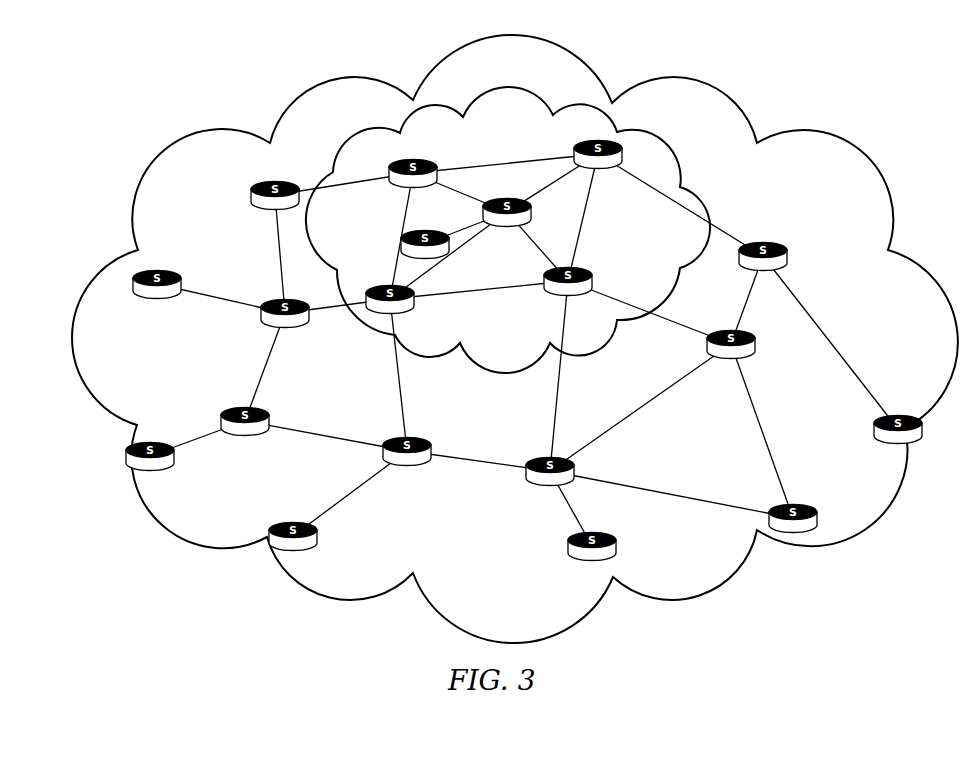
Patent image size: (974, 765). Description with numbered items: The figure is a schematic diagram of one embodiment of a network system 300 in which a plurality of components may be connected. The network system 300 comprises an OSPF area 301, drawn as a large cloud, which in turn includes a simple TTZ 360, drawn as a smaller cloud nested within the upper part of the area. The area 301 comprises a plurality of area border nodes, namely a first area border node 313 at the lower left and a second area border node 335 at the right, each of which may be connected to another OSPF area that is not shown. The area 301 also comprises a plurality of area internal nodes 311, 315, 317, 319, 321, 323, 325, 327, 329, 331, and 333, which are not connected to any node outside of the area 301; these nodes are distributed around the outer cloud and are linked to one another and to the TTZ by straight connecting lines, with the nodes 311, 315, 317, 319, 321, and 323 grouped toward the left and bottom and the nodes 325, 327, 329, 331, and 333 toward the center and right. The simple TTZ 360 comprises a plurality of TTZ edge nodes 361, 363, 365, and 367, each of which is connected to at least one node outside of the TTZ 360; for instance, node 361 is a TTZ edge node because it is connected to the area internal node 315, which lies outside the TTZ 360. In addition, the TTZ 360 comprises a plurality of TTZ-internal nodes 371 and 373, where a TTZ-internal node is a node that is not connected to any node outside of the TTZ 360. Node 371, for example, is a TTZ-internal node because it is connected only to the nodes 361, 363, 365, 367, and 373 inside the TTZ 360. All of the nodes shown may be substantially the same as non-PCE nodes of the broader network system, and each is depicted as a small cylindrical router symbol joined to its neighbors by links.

The network system 300 is at (90, 130).
The OSPF area 301 is at (837, 131).
The simple TTZ 360 is at (512, 83).
The area internal node 311 is at (157, 267).
The first area border node 313 is at (150, 470).
The area internal node 315 is at (275, 180).
The area internal node 317 is at (288, 322).
The area internal node 319 is at (246, 430).
The area internal node 321 is at (318, 535).
The area internal node 323 is at (413, 470).
The area internal node 325 is at (550, 483).
The node 327 is at (567, 543).
The area internal node 329 is at (768, 242).
The area internal node 331 is at (737, 330).
The area internal node 333 is at (807, 503).
The second area border node 335 is at (897, 413).
The TTZ edge node 361 is at (417, 160).
The TTZ edge node 363 is at (593, 140).
The TTZ edge node 365 is at (405, 310).
The TTZ edge node 367 is at (586, 268).
The TTZ-internal node 371 is at (507, 197).
The TTZ-internal node 373 is at (425, 230).